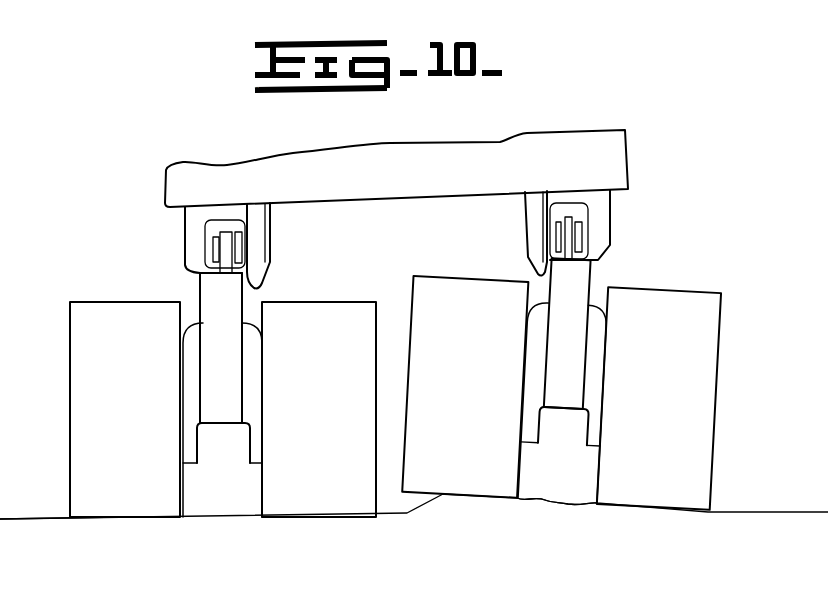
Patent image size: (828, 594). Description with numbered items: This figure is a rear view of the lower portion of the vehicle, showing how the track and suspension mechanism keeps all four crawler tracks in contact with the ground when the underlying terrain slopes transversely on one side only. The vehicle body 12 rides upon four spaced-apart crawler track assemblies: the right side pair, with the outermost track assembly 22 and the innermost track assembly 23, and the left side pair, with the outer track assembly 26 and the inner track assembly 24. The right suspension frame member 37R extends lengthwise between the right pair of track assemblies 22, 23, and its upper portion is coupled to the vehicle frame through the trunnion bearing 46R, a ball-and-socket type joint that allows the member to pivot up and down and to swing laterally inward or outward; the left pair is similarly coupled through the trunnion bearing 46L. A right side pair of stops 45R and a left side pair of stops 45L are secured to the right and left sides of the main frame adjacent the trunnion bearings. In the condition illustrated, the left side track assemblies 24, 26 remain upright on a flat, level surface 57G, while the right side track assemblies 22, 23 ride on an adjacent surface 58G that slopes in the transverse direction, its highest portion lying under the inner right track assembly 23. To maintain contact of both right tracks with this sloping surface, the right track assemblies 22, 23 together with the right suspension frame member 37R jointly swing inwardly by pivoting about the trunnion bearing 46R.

The vehicle body 12 is at (618, 157).
The crawler track assembly 22 is at (671, 419).
The crawler track assembly 23 is at (489, 411).
The crawler track assembly 24 is at (339, 423).
The crawler track assembly 26 is at (152, 423).
The right suspension frame member 37R is at (590, 287).
The left side pair of stops 45L is at (266, 276).
The right side pair of stops 45R is at (540, 267).
The trunnion bearing 46L is at (222, 238).
The trunnion bearing 46R is at (577, 222).
The flat level surface 57G is at (19, 517).
The sloping surface 58G is at (543, 498).